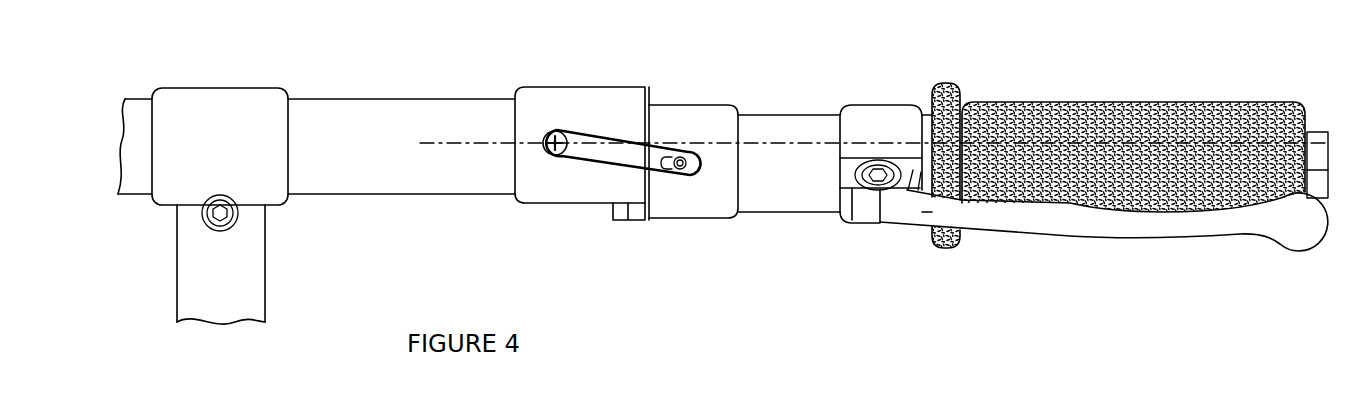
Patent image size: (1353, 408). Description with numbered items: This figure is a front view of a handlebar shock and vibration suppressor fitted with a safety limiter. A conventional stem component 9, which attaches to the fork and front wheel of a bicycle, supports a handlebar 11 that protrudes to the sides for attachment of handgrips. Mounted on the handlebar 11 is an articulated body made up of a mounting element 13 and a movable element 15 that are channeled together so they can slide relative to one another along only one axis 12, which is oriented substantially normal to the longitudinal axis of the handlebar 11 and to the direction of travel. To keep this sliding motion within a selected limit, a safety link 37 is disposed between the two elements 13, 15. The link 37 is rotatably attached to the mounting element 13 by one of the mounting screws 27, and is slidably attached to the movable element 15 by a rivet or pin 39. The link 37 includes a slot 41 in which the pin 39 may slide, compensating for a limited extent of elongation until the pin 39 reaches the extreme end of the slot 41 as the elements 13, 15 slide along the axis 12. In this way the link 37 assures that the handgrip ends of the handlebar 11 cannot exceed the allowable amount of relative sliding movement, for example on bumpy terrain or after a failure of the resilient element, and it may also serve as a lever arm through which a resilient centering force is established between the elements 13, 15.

The stem component 9 is at (224, 88).
The handlebar 11 is at (140, 103).
The axis 12 is at (648, 80).
The mounting element 13 is at (540, 197).
The movable element 15 is at (715, 112).
The mounting screw 27 is at (555, 132).
The safety link 37 is at (653, 157).
The pin 39 is at (688, 172).
The slot 41 is at (672, 172).